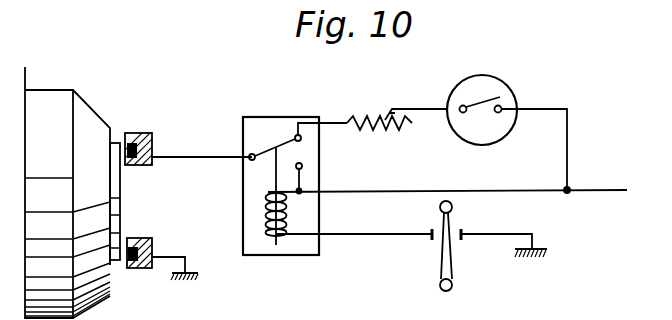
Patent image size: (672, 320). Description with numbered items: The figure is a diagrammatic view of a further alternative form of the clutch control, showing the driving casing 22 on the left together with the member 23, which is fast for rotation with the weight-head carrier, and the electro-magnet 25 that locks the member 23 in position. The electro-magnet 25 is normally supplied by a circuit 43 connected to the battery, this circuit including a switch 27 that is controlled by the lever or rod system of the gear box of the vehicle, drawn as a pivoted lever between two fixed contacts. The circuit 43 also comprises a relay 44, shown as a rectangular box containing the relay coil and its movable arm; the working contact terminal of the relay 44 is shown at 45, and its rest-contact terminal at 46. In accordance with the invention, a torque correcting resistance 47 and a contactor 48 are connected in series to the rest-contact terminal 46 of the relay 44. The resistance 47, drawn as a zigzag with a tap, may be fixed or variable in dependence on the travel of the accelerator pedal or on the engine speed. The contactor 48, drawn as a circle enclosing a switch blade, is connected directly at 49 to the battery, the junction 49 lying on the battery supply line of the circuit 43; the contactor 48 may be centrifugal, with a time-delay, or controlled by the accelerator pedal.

The driving casing 22 is at (92, 112).
The member fast for rotation with the weight-head carrier 23 is at (115, 143).
The electro-magnet 25 is at (152, 143).
The switch 27 is at (450, 226).
The circuit 43 is at (376, 191).
The relay 44 is at (285, 256).
The working contact terminal 45 is at (302, 166).
The rest-contact terminal 46 is at (297, 135).
The torque correcting resistance 47 is at (373, 128).
The contactor 48 is at (499, 85).
The connection to the battery 49 is at (565, 189).